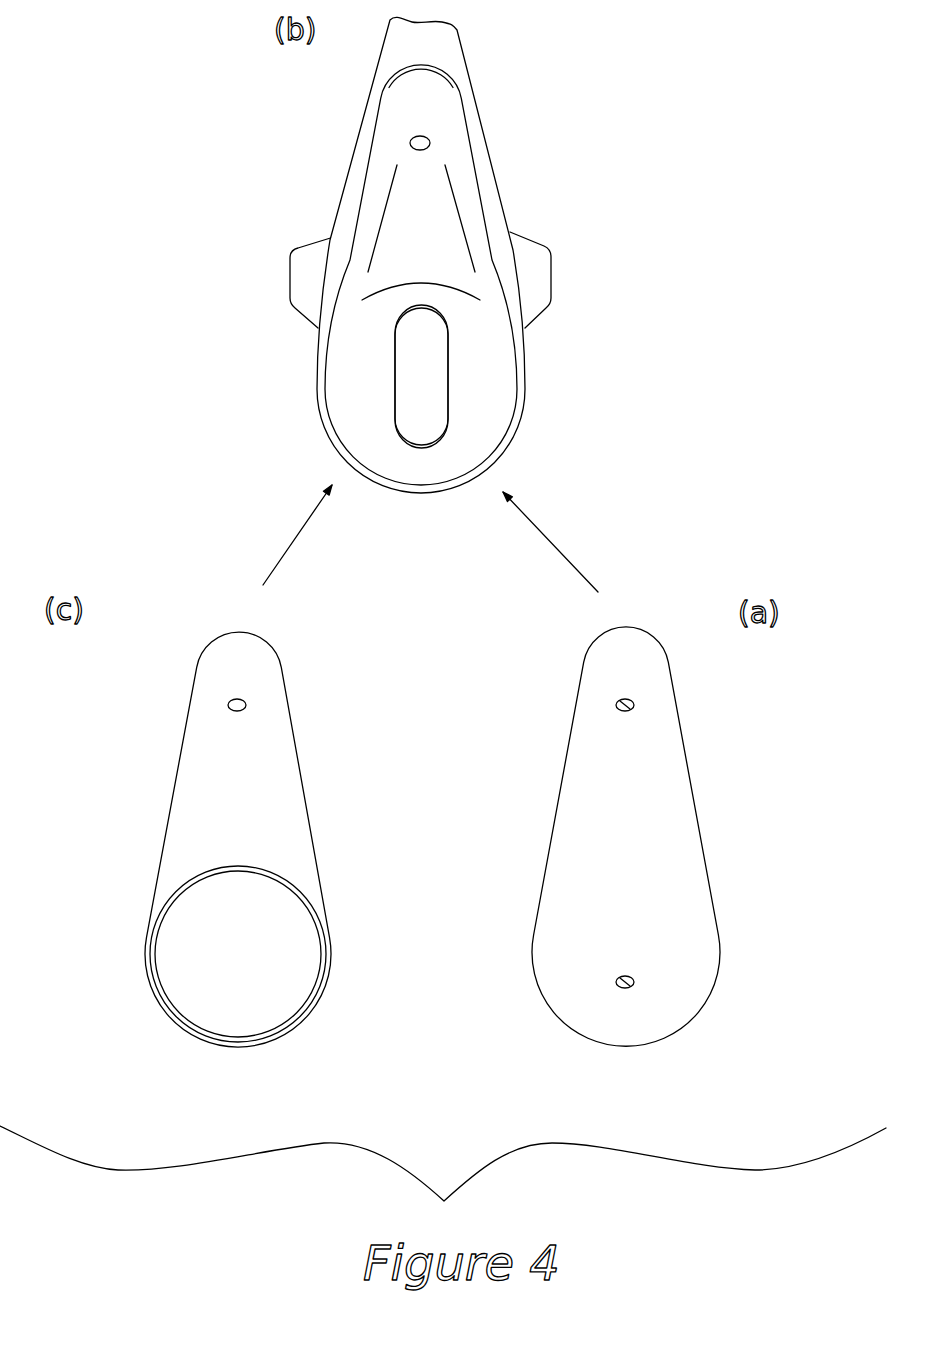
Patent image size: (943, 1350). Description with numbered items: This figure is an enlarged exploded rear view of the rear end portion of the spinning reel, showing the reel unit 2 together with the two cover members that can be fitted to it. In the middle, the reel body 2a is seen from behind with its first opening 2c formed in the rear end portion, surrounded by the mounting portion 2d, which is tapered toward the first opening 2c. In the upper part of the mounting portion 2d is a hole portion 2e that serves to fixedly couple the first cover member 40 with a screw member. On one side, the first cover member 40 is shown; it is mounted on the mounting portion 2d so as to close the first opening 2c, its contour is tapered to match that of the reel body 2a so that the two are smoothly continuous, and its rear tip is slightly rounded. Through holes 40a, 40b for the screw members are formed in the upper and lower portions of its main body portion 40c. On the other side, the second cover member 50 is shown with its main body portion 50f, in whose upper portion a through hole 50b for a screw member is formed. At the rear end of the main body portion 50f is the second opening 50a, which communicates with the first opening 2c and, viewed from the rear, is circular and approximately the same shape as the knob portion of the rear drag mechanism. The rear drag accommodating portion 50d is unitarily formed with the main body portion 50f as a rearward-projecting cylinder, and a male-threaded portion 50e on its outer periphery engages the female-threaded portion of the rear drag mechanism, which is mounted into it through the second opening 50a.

The reel unit 2 is at (515, 130).
The reel body 2a is at (490, 187).
The first opening 2c is at (448, 382).
The mounting portion 2d is at (382, 133).
The hole portion 2e is at (432, 143).
The first cover member 40 is at (693, 753).
The through hole 40a is at (625, 706).
The through hole 40b is at (620, 983).
The main body portion 40c is at (688, 897).
The second cover member 50 is at (320, 758).
The second opening 50a is at (310, 997).
The through hole 50b is at (232, 703).
The rear drag accommodating portion 50d is at (173, 888).
The male-threaded portion 50e is at (305, 890).
The main body portion 50f is at (202, 763).